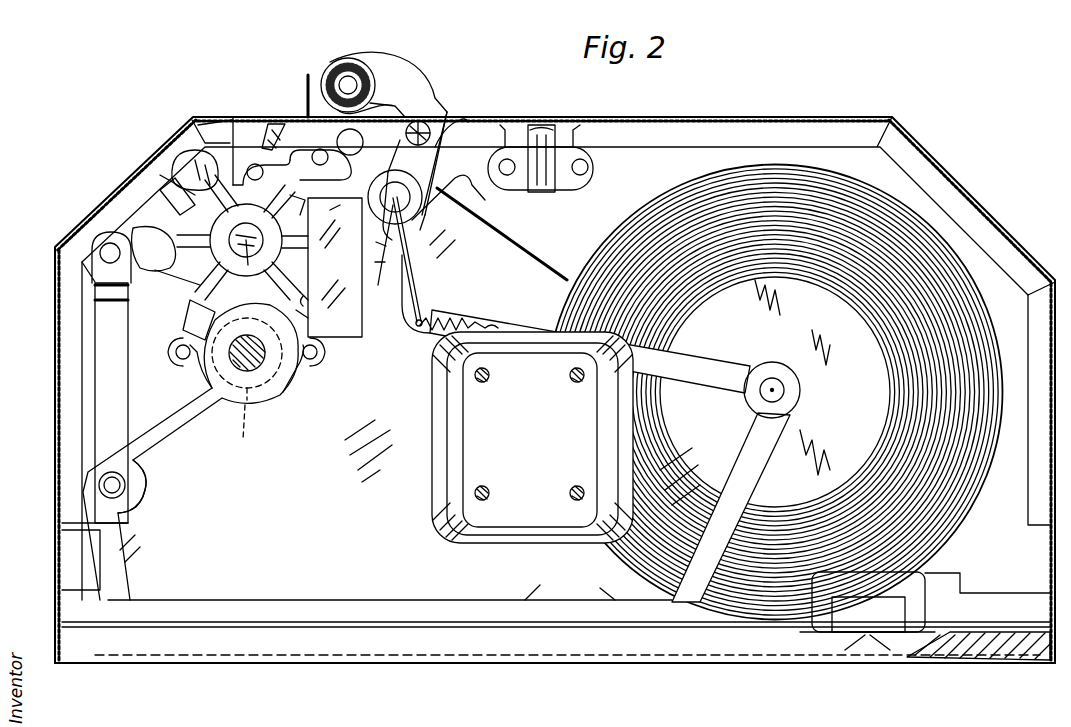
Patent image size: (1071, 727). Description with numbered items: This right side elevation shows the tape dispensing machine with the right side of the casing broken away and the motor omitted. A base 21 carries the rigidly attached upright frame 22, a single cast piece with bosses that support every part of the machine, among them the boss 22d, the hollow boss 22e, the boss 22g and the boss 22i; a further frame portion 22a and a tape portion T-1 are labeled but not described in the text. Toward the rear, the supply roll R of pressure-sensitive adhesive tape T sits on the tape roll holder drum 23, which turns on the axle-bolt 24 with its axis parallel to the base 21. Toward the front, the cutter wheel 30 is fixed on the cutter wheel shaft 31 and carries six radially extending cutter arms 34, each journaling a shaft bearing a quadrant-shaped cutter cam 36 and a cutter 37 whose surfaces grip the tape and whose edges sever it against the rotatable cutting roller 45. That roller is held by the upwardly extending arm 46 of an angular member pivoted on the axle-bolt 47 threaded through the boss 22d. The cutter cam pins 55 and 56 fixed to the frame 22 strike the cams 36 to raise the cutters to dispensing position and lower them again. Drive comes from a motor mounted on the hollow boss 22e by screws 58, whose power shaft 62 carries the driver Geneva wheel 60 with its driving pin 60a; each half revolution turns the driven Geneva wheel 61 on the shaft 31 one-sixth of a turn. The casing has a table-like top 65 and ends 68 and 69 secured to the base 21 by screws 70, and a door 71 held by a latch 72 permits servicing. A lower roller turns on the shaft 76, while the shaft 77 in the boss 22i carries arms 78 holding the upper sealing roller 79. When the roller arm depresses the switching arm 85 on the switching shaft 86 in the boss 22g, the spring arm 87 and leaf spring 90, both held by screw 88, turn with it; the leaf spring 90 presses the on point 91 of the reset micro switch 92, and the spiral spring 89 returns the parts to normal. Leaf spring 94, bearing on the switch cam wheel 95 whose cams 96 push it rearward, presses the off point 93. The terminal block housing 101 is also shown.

The base 21 is at (490, 652).
The upright frame 22 is at (365, 560).
The pivot boss of frame plate 22a is at (792, 398).
The boss 22d is at (128, 498).
The hollow boss 22e is at (620, 440).
The boss 22g is at (400, 175).
The boss 22i is at (447, 122).
The tape roll holder drum 23 is at (775, 392).
The axle-bolt 24 is at (778, 388).
The cutter wheel 30 is at (200, 207).
The cutter wheel shaft 31 is at (250, 252).
The cutter arms 34 is at (188, 292).
The cutter cam 36 is at (190, 322).
The cutter 37 is at (175, 290).
The cutting roller 45 is at (92, 262).
The upwardly extending arm 46 is at (105, 345).
The axle-bolt 47 is at (118, 485).
The cutter cam pin 55 is at (258, 158).
The cutter cam pin 56 is at (312, 158).
The screws 58 is at (545, 486).
The driver Geneva wheel 60 is at (290, 378).
The driving pin 60a is at (318, 355).
The driven Geneva wheel 61 is at (300, 190).
The power shaft 62 is at (265, 372).
The plane surface top 65 is at (735, 117).
The end 68 is at (57, 390).
The end 69 is at (1040, 488).
The screws 70 is at (70, 663).
The door 71 is at (275, 135).
The latch 72 is at (540, 130).
The shaft 76 is at (337, 140).
The shaft 77 is at (405, 133).
The upper sealing roller arms 78 is at (392, 82).
The upper sealing roller 79 is at (345, 62).
The switching arm 85 is at (458, 183).
The switching shaft 86 is at (405, 212).
The spring arm 87 is at (412, 260).
The screw 88 is at (383, 195).
The spiral spring 89 is at (463, 322).
The leaf spring 90 is at (377, 243).
The on point 91 is at (378, 286).
The reset micro switch 92 is at (345, 337).
The off point 93 is at (306, 300).
The leaf spring 94 is at (305, 318).
The switch cam wheel 95 is at (241, 414).
The cams 96 is at (215, 410).
The terminal block housing 101 is at (915, 600).
The supply roll R is at (685, 185).
The tape T is at (510, 238).
The tape end T-1 is at (306, 78).